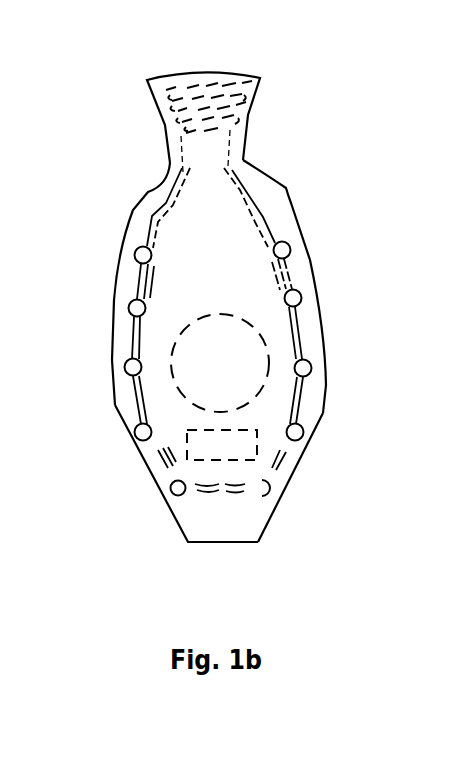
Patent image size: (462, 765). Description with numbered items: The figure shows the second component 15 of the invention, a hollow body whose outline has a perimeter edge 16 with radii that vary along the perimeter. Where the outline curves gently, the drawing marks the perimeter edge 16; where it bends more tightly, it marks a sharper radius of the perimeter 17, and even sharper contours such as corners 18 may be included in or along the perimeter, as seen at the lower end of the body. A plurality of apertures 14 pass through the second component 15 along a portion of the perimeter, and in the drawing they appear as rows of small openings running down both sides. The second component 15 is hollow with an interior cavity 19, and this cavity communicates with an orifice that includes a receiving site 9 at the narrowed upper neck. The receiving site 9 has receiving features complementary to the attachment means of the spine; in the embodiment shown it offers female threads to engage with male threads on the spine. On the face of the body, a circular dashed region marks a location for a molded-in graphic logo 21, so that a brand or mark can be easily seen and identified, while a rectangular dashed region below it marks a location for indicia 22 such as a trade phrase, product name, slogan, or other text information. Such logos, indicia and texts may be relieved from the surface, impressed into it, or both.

The receiving site 9 is at (242, 98).
The apertures 14 is at (128, 305).
The second component 15 is at (160, 127).
The perimeter edge 16 is at (312, 259).
The sharper radius of the perimeter 17 is at (329, 414).
The corners 18 is at (259, 544).
The interior cavity 19 is at (147, 230).
The location for a molded-in graphic logo 21 is at (264, 335).
The location for indicia 22 is at (248, 461).